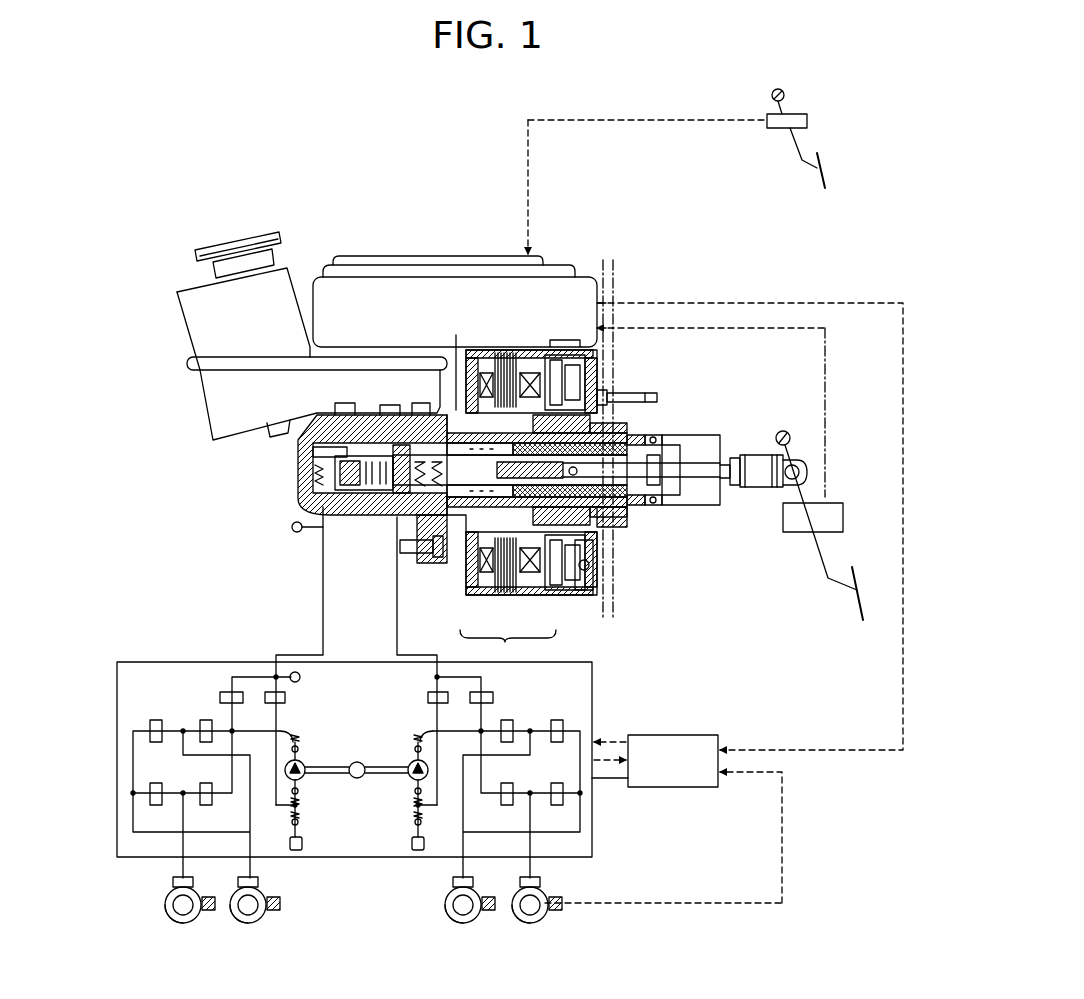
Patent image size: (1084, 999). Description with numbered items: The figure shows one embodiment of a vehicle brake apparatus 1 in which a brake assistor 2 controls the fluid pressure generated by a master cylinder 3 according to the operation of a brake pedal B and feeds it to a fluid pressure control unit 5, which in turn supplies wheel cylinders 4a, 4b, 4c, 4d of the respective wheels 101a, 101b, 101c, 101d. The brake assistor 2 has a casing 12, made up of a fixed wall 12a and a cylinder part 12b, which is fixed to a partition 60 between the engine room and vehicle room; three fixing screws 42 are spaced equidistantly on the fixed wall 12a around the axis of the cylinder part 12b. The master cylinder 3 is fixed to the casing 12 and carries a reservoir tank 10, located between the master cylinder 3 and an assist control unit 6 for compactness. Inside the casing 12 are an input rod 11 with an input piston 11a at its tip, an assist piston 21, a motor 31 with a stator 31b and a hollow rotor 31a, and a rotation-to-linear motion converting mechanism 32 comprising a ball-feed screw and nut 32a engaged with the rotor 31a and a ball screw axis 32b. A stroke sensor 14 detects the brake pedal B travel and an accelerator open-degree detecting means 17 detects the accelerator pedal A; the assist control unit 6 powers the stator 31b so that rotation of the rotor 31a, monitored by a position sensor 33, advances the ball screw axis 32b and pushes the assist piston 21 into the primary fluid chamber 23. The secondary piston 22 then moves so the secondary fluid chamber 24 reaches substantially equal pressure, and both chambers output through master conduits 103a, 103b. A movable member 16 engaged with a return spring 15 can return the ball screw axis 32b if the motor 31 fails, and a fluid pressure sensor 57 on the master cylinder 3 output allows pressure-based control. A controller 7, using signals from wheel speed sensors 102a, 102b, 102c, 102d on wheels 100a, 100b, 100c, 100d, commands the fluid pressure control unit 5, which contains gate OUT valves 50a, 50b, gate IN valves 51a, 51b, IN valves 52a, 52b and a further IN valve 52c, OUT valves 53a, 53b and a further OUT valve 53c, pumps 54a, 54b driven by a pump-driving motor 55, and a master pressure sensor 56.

The vehicle brake apparatus 1 is at (645, 248).
The brake assistor 2 is at (672, 305).
The master cylinder 3 is at (298, 455).
The wheel cylinder 4a is at (452, 880).
The wheel cylinder 4b is at (258, 880).
The wheel cylinder 4c is at (172, 880).
The wheel cylinder 4d is at (540, 880).
The fluid pressure control unit 5 is at (595, 668).
The assist control unit 6 is at (380, 255).
The controller 7 is at (672, 734).
The reservoir tank 10 is at (178, 312).
The input rod 11 is at (700, 475).
The input piston 11a is at (443, 440).
The casing 12 is at (462, 575).
The fixed wall 12a is at (612, 528).
The cylinder part 12b is at (670, 507).
The stroke sensor 14 is at (845, 510).
The return spring 15 is at (633, 508).
The movable member 16 is at (652, 508).
The accelerator open-degree detecting means 17 is at (812, 120).
The assist piston 21 is at (426, 528).
The secondary piston 22 is at (355, 512).
The primary fluid chamber 23 is at (396, 510).
The secondary fluid chamber 24 is at (325, 478).
The motor 31 is at (508, 649).
The rotor 31a is at (552, 592).
The stator 31b is at (500, 590).
The rotation-to-linear motion converting mechanism 32 is at (766, 388).
The ball-feed screw and nut 32a is at (592, 418).
The ball screw axis 32b is at (622, 432).
The position sensor 33 is at (590, 565).
The fixing screws 42 is at (630, 396).
The gate OUT valve 50a is at (505, 690).
The gate OUT valve 50b is at (220, 696).
The gate IN valve 51a is at (428, 698).
The gate IN valve 51b is at (286, 697).
The IN valve 52a is at (512, 720).
The IN valve 52b is at (203, 720).
The inlet valve 52c is at (206, 805).
The OUT valve 53a is at (558, 720).
The OUT valve 53b is at (152, 720).
The outlet valve 53c is at (156, 805).
The pump 54a is at (415, 760).
The pump 54b is at (298, 760).
The pump-driving motor 55 is at (356, 779).
The master pressure sensor 56 is at (314, 679).
The fluid pressure sensor 57 is at (292, 527).
The partition 60 is at (616, 338).
The wheel 100a is at (452, 910).
The wheel 100b is at (250, 918).
The wheel 100c is at (172, 910).
The wheel 100d is at (530, 918).
The wheel 101a is at (446, 905).
The wheel 101b is at (262, 915).
The wheel 101c is at (166, 905).
The wheel 101d is at (545, 895).
The wheel speed sensor 102a is at (488, 911).
The wheel speed sensor 102b is at (280, 903).
The wheel speed sensor 102c is at (208, 911).
The wheel speed sensor 102d is at (560, 912).
The master conduit 103a is at (397, 618).
The master conduit 103b is at (322, 607).
The accelerator pedal A is at (822, 168).
The brake pedal B is at (860, 580).